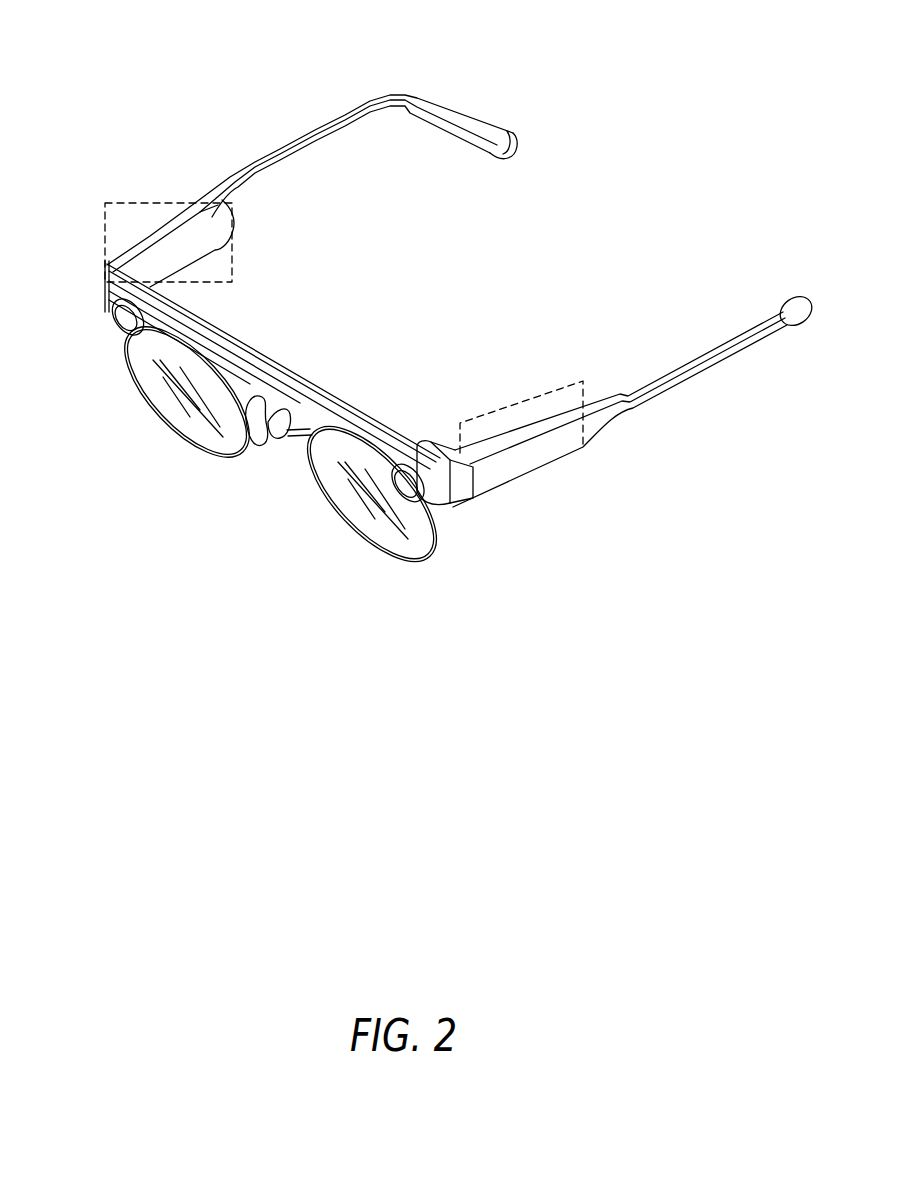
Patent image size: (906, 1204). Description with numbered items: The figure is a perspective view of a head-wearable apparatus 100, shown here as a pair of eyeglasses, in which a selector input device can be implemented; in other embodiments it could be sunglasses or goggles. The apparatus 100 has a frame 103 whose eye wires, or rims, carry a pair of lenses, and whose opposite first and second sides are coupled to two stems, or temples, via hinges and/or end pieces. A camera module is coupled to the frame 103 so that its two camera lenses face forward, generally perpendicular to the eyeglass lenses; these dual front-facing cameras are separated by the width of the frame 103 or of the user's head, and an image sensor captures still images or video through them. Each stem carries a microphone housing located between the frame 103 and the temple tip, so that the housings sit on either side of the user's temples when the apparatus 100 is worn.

The head-wearable apparatus 100 is at (415, 299).
The frame 103 is at (135, 380).